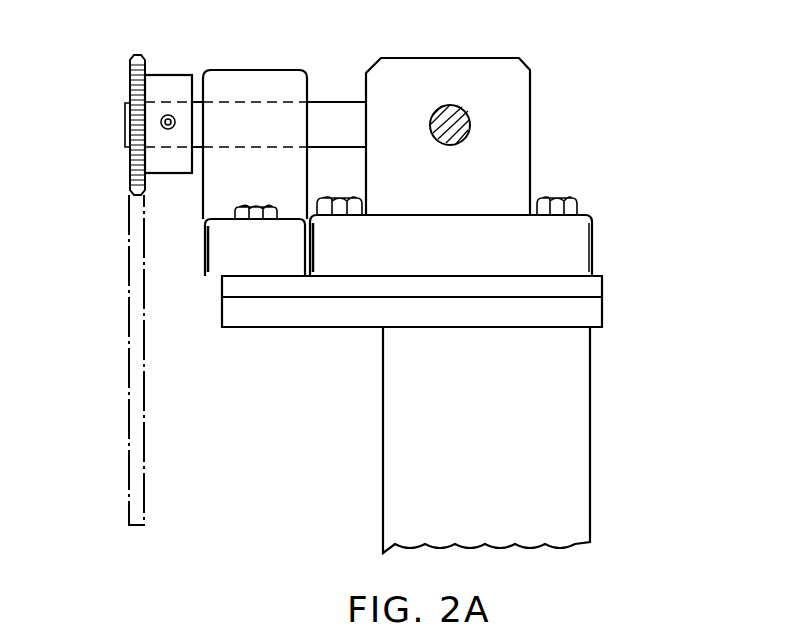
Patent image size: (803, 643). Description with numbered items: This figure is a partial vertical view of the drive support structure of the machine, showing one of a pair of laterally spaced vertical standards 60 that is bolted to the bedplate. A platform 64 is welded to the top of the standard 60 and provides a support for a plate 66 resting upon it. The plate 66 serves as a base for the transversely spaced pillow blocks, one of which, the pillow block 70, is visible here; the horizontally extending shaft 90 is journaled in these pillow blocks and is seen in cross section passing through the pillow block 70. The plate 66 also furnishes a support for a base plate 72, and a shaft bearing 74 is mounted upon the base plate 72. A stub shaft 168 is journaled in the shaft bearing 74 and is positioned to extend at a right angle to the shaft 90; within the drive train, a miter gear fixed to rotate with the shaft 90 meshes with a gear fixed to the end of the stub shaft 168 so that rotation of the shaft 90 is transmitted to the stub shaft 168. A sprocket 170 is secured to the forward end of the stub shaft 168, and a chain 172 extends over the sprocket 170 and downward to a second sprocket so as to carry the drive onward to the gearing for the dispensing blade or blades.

The vertical standard 60 is at (583, 445).
The platform 64 is at (233, 318).
The plate 66 is at (233, 287).
The pillow block 70 is at (518, 148).
The base plate 72 is at (218, 243).
The shaft bearing 74 is at (240, 70).
The horizontally extending shaft 90 is at (462, 112).
The stub shaft 168 is at (329, 108).
The sprocket 170 is at (130, 78).
The chain 172 is at (130, 347).